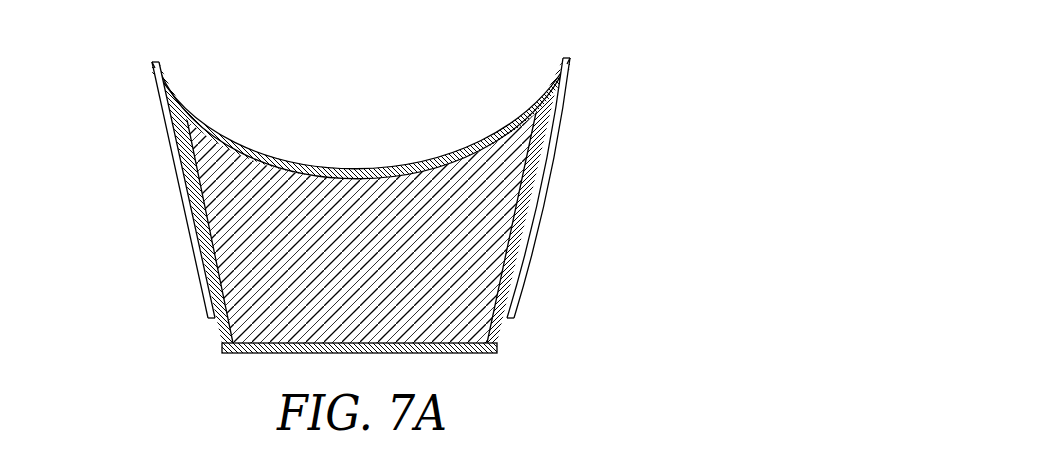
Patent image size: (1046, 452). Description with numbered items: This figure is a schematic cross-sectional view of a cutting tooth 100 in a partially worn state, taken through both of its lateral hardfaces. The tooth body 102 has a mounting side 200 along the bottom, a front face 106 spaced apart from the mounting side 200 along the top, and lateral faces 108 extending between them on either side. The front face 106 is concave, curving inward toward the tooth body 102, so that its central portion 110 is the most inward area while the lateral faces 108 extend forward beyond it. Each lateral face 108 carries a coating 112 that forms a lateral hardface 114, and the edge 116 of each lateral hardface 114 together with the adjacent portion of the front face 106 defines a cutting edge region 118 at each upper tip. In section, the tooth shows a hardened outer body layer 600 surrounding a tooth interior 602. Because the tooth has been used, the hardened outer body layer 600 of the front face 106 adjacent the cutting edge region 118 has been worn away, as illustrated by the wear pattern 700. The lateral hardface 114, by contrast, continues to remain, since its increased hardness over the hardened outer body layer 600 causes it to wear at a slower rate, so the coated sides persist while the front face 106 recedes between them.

The cutting tooth 100 is at (396, 203).
The tooth body 102 is at (168, 83).
The front face 106 is at (518, 105).
The lateral faces 108 is at (180, 205).
The central portion 110 is at (330, 163).
The coating 112 is at (172, 147).
The lateral hardface 114 is at (207, 287).
The edge 116 is at (152, 63).
The cutting edge region 118 is at (152, 62).
The mounting side 200 is at (233, 357).
The hardened outer body layer 600 is at (400, 167).
The tooth interior 602 is at (462, 185).
The wear pattern 700 is at (207, 122).